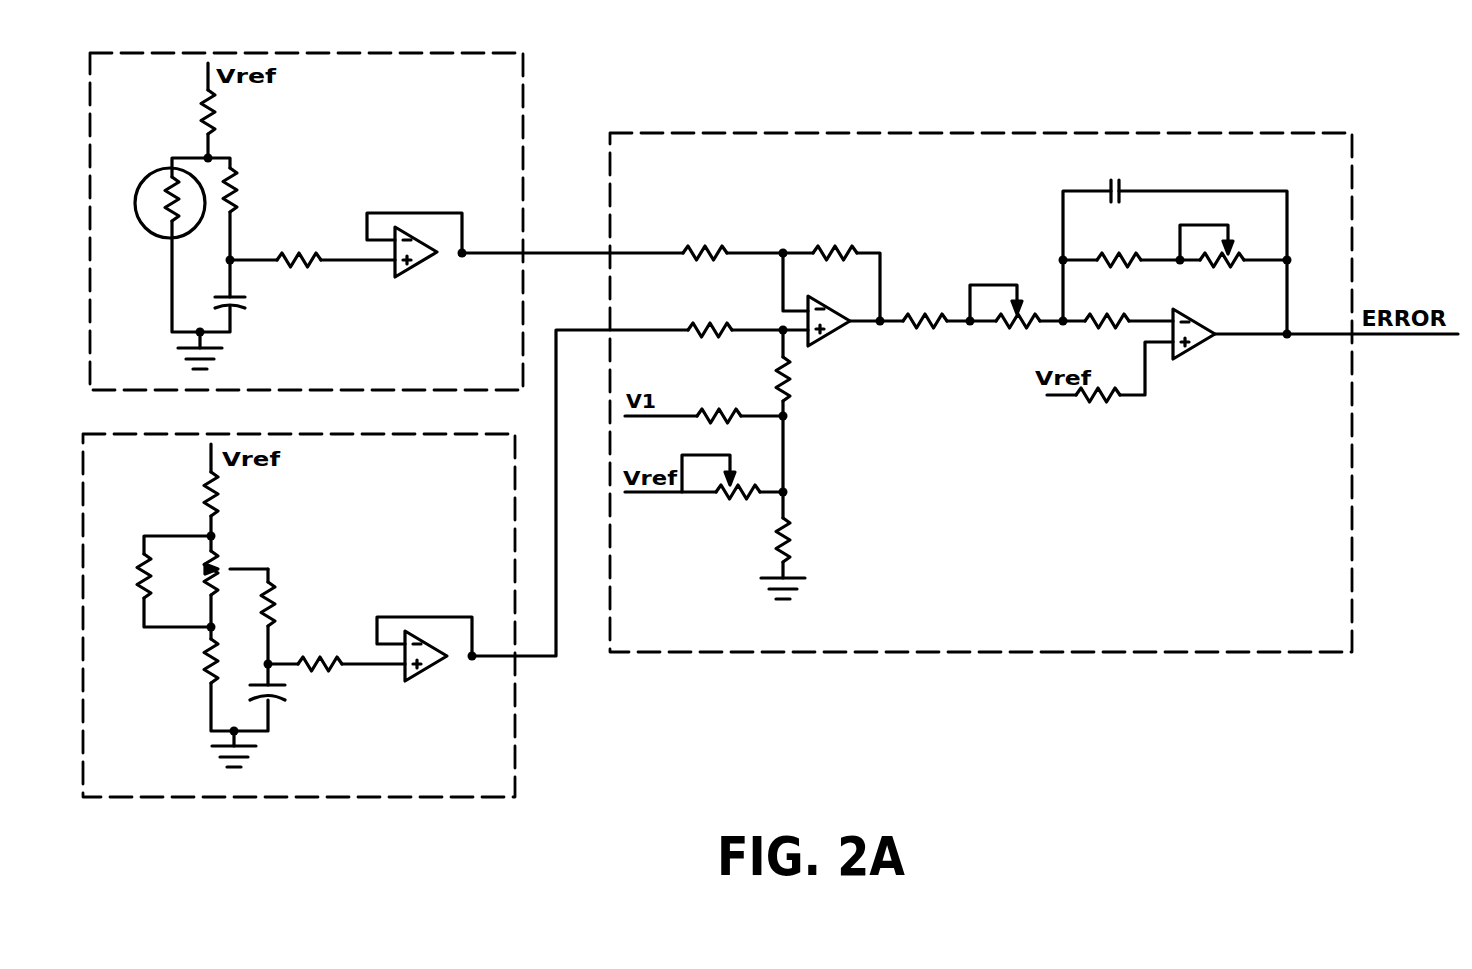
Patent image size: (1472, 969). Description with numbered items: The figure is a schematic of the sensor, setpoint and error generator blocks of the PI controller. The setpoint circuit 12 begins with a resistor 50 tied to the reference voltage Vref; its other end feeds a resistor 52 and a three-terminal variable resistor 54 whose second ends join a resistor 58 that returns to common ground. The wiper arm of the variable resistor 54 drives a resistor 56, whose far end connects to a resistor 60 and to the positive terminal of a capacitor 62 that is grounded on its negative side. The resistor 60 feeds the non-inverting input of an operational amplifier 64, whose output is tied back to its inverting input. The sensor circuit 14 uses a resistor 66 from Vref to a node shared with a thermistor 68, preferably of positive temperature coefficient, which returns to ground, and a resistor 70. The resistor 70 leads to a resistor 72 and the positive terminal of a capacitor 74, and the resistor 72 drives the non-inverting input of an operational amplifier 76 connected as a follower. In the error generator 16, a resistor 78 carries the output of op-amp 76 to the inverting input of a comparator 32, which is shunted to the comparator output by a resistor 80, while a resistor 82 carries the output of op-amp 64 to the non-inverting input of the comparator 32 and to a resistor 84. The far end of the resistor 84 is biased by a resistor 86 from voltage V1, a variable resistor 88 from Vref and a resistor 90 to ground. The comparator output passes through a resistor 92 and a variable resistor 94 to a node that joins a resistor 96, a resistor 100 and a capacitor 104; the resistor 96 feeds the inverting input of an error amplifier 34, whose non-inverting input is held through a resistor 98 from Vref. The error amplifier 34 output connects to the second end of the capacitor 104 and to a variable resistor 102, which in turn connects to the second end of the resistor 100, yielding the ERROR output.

The setpoint circuit 12 is at (517, 741).
The sensor circuit 14 is at (473, 57).
The error generator 16 is at (1167, 135).
The comparator 32 is at (833, 333).
The error amplifier 34 is at (1200, 351).
The resistor 50 is at (222, 480).
The resistor 52 is at (137, 566).
The variable resistor 54 is at (231, 552).
The resistor 56 is at (275, 605).
The resistor 58 is at (201, 677).
The resistor 60 is at (328, 671).
The capacitor 62 is at (263, 699).
The operational amplifier 64 is at (421, 673).
The resistor 66 is at (215, 120).
The thermistor 68 is at (158, 171).
The resistor 70 is at (235, 192).
The resistor 72 is at (302, 268).
The capacitor 74 is at (245, 303).
The operational amplifier 76 is at (425, 268).
The resistor 78 is at (702, 248).
The resistor 80 is at (830, 247).
The resistor 82 is at (714, 322).
The resistor 84 is at (788, 387).
The resistor 86 is at (724, 410).
The variable resistor 88 is at (728, 498).
The resistor 90 is at (788, 543).
The resistor 92 is at (910, 333).
The variable resistor 94 is at (1033, 333).
The resistor 96 is at (1113, 313).
The resistor 98 is at (1093, 402).
The resistor 100 is at (1120, 247).
The variable resistor 102 is at (1210, 268).
The capacitor 104 is at (1123, 182).